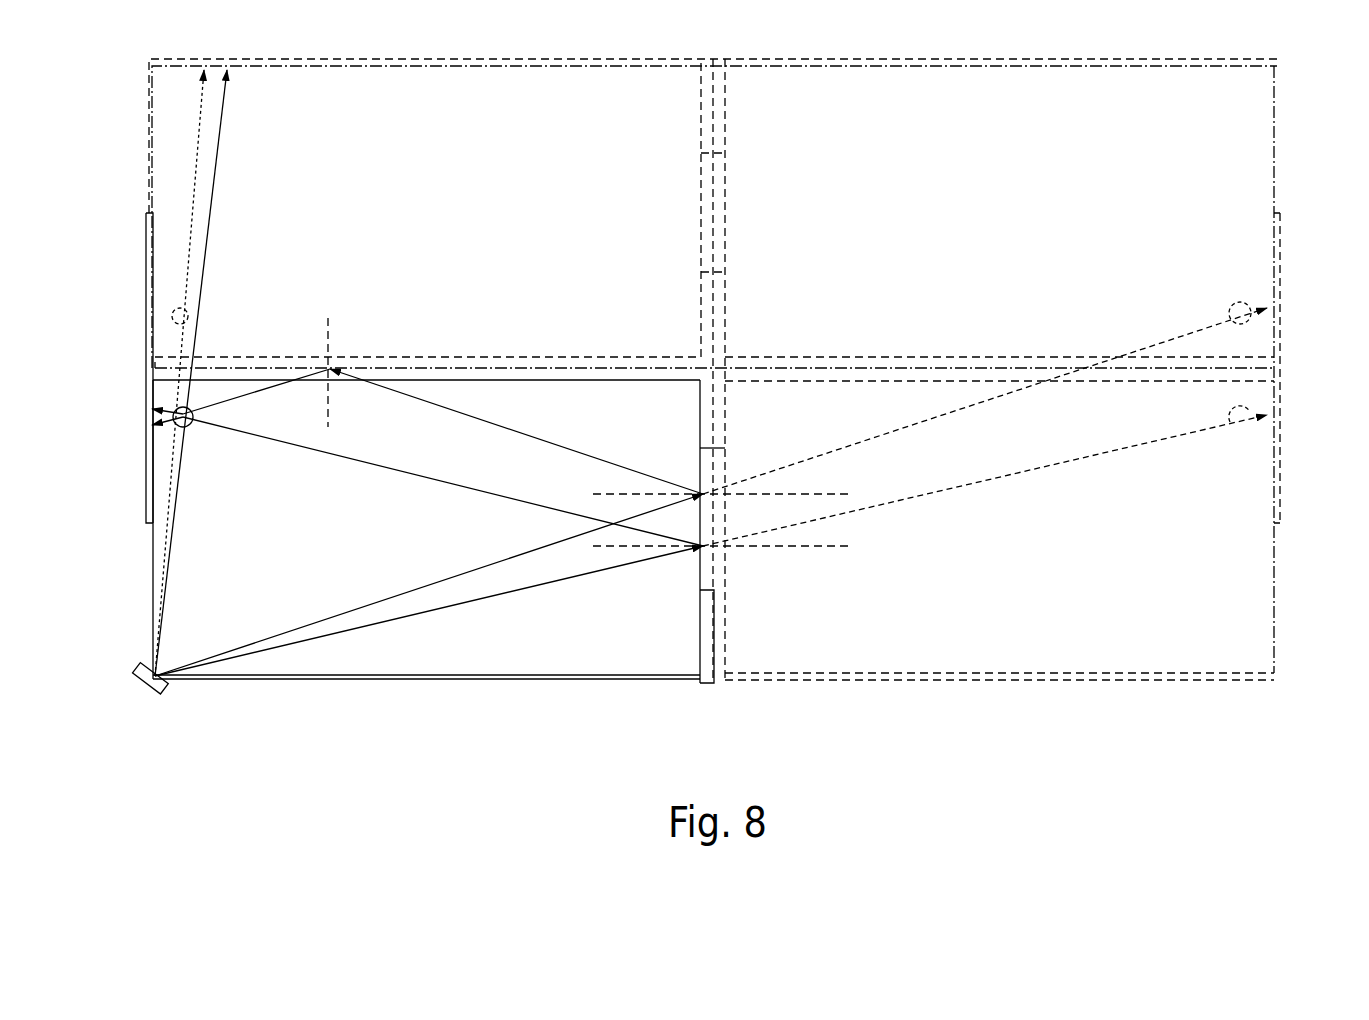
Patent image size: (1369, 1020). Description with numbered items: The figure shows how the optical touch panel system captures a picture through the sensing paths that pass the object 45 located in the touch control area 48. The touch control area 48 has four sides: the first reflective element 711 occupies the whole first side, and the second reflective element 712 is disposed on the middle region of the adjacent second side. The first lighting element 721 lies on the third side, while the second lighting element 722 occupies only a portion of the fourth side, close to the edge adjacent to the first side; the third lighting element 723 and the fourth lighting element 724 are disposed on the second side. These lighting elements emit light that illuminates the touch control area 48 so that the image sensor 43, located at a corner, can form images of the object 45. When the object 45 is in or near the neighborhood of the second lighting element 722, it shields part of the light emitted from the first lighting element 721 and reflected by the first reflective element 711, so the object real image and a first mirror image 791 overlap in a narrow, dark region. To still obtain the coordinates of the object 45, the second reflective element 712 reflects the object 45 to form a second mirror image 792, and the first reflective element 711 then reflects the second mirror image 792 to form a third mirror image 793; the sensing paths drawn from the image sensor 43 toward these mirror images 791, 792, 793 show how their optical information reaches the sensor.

The image sensor 43 is at (140, 688).
The object 45 is at (150, 405).
The touch control area 48 is at (402, 641).
The first reflective element 711 is at (233, 375).
The second reflective element 712 is at (700, 580).
The first lighting element 721 is at (438, 680).
The second lighting element 722 is at (145, 493).
The third lighting element 723 is at (705, 437).
The fourth lighting element 724 is at (707, 655).
The first mirror image 791 is at (175, 308).
The second mirror image 792 is at (1235, 428).
The third mirror image 793 is at (1232, 320).